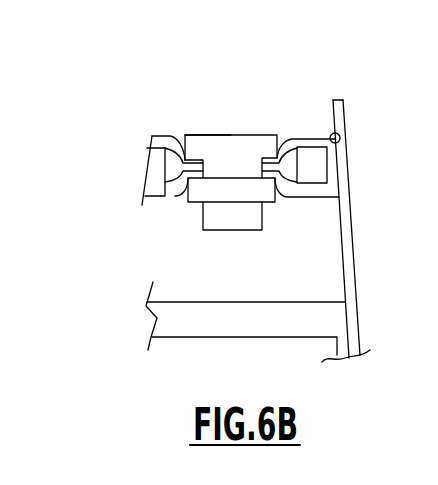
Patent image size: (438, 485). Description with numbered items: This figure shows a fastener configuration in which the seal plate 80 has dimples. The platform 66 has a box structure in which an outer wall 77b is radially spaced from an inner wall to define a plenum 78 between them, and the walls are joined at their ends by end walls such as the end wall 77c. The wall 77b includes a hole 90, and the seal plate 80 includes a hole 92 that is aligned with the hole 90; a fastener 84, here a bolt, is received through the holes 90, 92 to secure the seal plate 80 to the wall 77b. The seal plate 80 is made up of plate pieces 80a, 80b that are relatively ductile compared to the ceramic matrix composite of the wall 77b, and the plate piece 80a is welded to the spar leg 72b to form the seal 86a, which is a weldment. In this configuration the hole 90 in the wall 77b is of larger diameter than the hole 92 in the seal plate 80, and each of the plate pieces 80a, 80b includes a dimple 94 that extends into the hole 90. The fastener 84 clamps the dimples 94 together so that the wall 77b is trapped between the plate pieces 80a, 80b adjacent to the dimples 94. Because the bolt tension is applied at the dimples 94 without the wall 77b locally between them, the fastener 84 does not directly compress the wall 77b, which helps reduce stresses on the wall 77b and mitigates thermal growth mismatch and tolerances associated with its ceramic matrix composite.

The platform 66 is at (161, 320).
The spar leg 72b is at (352, 262).
The outer wall 77b is at (151, 162).
The end wall 77c is at (210, 322).
The plenum 78 is at (251, 284).
The seal plate 80 is at (163, 117).
The plate piece 80a is at (309, 139).
The plate piece 80b is at (308, 197).
The fastener 84 is at (258, 136).
The seal 86a is at (340, 137).
The hole 90 is at (294, 171).
The hole 92 is at (210, 136).
The dimple 94 is at (286, 139).